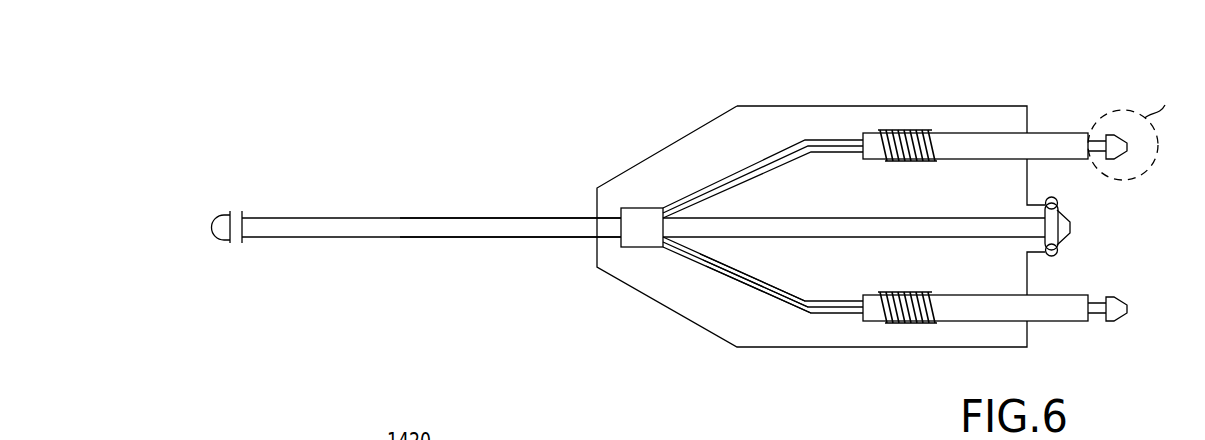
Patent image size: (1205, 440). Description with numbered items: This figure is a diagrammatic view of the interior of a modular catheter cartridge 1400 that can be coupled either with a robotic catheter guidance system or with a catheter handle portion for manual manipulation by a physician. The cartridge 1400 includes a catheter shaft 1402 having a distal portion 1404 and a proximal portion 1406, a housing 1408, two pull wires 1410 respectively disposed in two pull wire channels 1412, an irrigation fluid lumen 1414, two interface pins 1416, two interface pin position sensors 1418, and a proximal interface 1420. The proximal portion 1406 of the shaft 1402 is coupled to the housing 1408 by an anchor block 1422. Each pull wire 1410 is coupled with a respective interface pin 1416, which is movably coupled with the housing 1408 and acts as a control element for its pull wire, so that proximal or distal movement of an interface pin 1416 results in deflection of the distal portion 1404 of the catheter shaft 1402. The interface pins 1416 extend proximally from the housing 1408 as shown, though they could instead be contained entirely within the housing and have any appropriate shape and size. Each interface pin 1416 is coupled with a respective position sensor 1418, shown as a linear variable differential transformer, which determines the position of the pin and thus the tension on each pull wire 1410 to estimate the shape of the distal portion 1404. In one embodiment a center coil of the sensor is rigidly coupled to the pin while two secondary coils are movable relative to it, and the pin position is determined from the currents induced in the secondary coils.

The modular catheter cartridge 1400 is at (685, 185).
The catheter shaft 1402 is at (308, 218).
The distal portion 1404 is at (218, 213).
The proximal portion 1406 is at (503, 217).
The housing 1408 is at (788, 106).
The pull wire 1410 is at (715, 263).
The pull wire channel 1412 is at (778, 283).
The irrigation fluid lumen 1414 is at (810, 218).
The interface pin 1416 is at (1055, 133).
The interface pin position sensor 1418 is at (913, 130).
The proximal interface 1420 is at (1101, 234).
The anchor block 1422 is at (642, 206).